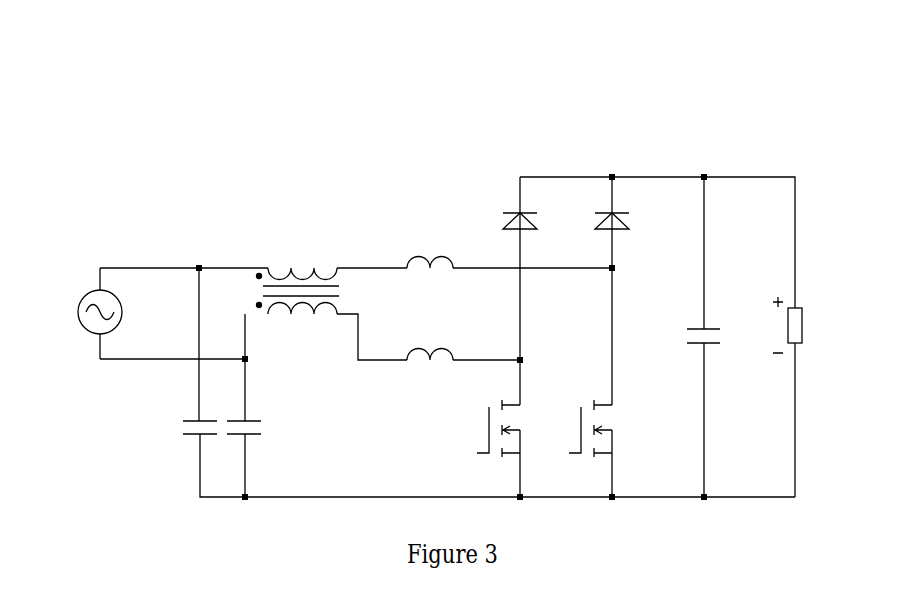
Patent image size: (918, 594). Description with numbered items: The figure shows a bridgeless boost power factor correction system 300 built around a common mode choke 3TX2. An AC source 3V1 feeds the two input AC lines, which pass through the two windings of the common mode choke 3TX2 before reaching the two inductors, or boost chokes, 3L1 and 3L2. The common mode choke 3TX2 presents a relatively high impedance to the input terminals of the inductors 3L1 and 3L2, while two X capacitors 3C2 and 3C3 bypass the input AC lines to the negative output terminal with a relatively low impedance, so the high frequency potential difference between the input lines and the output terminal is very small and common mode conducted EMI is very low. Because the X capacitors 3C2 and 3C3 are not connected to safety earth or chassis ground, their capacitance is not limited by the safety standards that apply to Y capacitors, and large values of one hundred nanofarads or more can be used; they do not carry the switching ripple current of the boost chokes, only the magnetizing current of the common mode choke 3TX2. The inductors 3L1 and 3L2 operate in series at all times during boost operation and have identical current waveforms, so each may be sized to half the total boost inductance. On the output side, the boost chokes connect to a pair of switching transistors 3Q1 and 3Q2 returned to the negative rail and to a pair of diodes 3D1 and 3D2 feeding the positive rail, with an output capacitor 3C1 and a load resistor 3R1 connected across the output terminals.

The bridgeless boost PFC system 300 is at (364, 131).
The AC source 3V1 is at (77, 331).
The common mode choke 3TX2 is at (298, 272).
The inductor 3L1 is at (430, 246).
The inductor 3L2 is at (430, 339).
The first diode 3D1 is at (540, 216).
The second diode 3D2 is at (636, 214).
The output capacitor 3C1 is at (724, 330).
The load resistor 3R1 is at (821, 322).
The X capacitor 3C2 is at (179, 420).
The X capacitor 3C3 is at (270, 425).
The first switching transistor 3Q1 is at (496, 448).
The second switching transistor 3Q2 is at (588, 448).